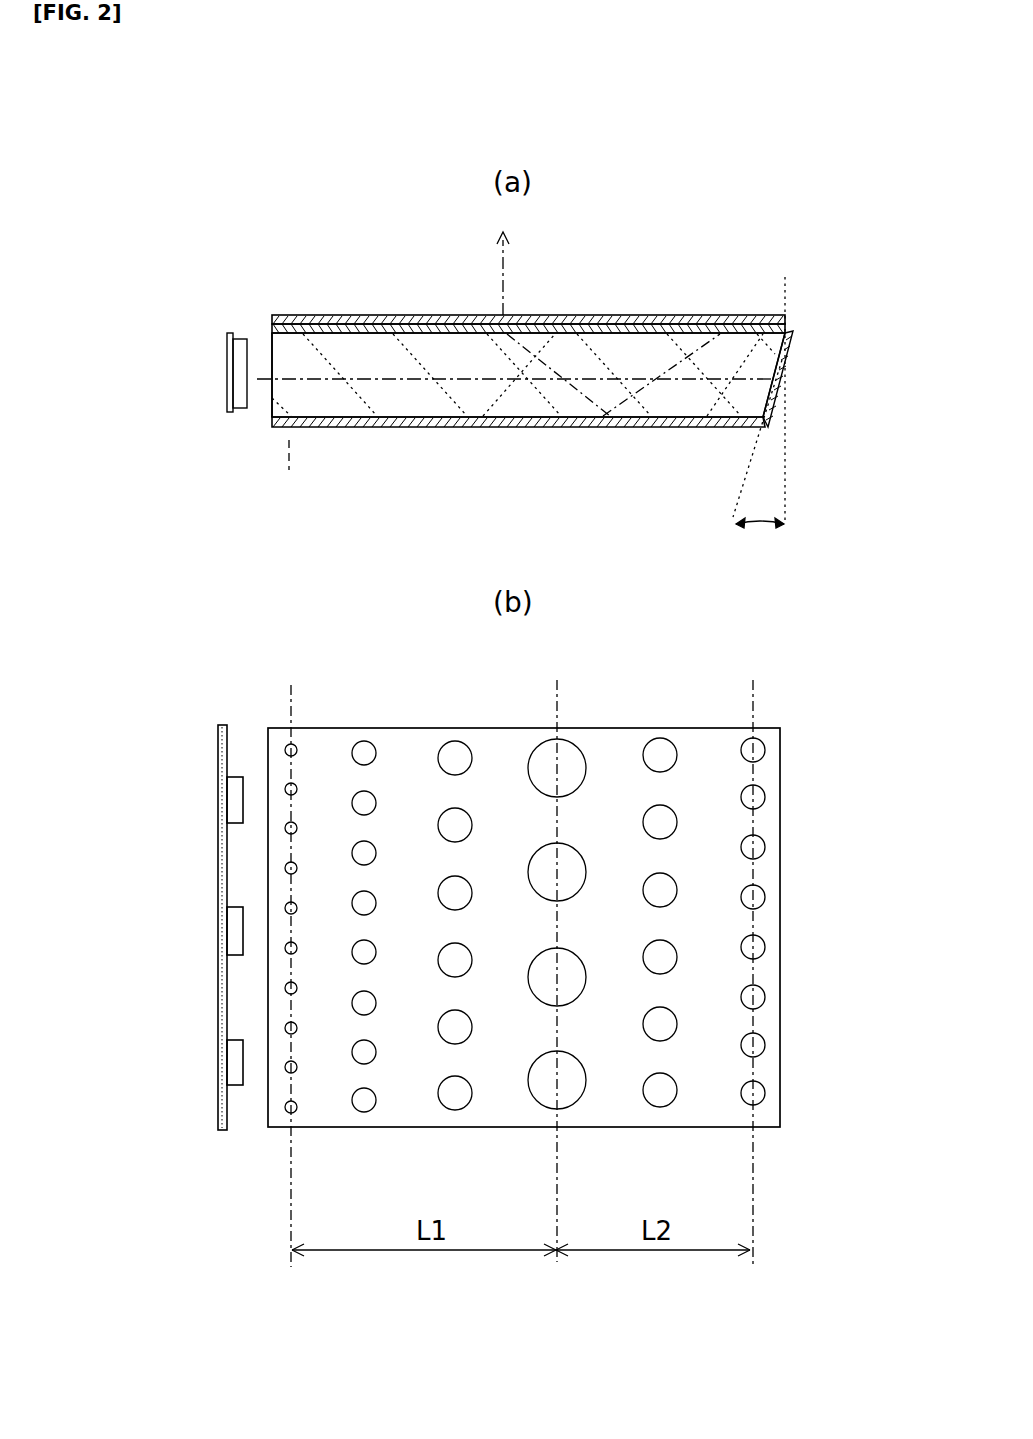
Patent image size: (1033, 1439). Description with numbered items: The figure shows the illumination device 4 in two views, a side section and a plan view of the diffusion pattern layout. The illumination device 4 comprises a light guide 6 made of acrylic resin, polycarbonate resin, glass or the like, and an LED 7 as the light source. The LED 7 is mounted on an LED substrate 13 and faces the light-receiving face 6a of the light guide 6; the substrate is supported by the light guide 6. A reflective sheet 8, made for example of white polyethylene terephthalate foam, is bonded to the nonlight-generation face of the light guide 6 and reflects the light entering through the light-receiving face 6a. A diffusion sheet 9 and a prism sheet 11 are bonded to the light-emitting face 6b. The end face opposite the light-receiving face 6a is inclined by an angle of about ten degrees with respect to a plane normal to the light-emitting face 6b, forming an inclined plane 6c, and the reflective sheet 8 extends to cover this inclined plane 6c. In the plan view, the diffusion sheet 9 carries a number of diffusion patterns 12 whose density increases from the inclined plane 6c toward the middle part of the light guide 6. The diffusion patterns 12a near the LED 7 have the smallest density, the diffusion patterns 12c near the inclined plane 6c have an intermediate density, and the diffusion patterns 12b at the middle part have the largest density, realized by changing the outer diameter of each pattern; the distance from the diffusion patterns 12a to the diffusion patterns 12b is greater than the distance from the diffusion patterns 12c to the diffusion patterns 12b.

The illumination device 4 is at (820, 294).
The light guide 6 is at (493, 403).
The light-receiving face 6a is at (271, 409).
The light-emitting face 6b is at (550, 324).
The inclined plane 6c is at (780, 391).
The LED 7 is at (243, 340).
The reflective sheet 8 is at (408, 427).
The diffusion sheet 9 is at (447, 342).
The prism sheet 11 is at (340, 315).
The diffusion patterns 12 is at (588, 953).
The diffusion patterns near the LED 12a is at (295, 745).
The diffusion patterns at the middle part 12b is at (550, 739).
The diffusion patterns at the inclined plane side 12c is at (816, 953).
The LED substrate 13 is at (232, 340).